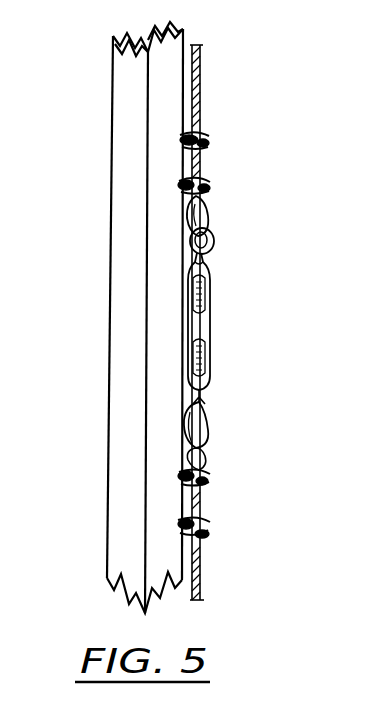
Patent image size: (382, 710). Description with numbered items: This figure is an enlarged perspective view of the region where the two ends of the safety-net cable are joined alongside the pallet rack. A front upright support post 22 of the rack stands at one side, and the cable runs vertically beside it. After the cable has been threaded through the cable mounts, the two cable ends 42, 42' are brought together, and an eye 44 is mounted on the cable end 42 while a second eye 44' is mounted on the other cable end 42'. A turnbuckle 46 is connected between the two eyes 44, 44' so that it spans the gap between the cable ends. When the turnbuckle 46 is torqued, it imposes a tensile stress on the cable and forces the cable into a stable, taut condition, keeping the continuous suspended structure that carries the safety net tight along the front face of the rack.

The front upright support post 22 is at (110, 236).
The cable end 42 is at (226, 146).
The eye 44 is at (225, 216).
The turnbuckle 46 is at (210, 323).
The eye 44' is at (230, 444).
The cable end 42' is at (229, 519).